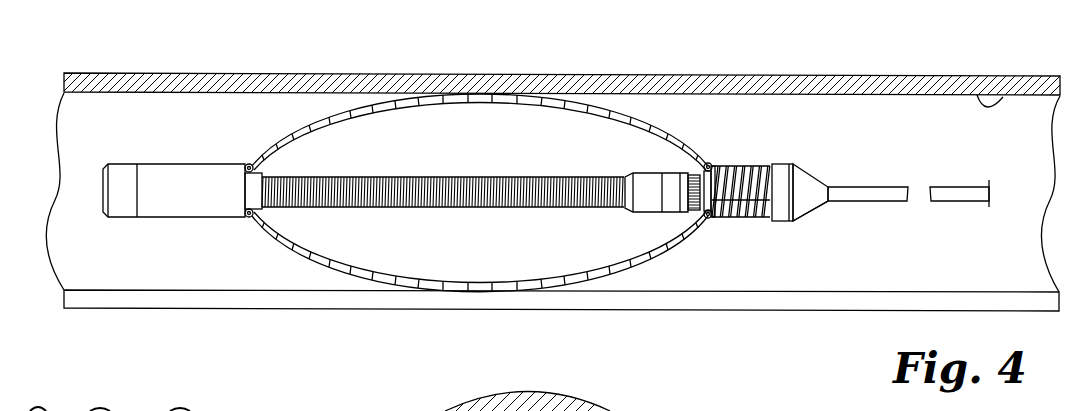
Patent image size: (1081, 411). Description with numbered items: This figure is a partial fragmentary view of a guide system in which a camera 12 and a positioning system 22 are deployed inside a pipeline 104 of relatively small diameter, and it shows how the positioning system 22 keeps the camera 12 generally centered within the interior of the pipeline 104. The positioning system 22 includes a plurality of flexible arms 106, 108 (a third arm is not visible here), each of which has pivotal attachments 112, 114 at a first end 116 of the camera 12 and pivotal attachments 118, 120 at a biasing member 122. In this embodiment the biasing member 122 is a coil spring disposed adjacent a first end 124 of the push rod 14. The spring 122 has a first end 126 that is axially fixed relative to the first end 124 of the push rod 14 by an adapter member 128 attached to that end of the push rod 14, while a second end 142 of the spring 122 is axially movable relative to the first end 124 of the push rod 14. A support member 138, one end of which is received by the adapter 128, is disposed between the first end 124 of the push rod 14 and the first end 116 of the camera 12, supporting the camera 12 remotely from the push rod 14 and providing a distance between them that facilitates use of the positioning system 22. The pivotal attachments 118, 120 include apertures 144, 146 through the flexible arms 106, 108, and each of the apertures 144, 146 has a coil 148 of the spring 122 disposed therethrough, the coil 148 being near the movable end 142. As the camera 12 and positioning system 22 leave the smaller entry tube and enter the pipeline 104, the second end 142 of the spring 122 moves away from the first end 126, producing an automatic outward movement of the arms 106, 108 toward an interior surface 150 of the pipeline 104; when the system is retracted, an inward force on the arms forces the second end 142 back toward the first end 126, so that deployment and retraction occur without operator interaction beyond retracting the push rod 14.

The camera 12 is at (127, 155).
The push rod 14 is at (885, 186).
The positioning system 22 is at (448, 184).
The pipeline 104 is at (808, 74).
The flexible arm 106 is at (285, 127).
The flexible arm 108 is at (315, 268).
The pivotal attachment 112 is at (246, 163).
The pivotal attachment 114 is at (250, 221).
The first end of the camera 116 is at (246, 216).
The pivotal attachment 118 is at (714, 170).
The pivotal attachment 120 is at (710, 216).
The biasing member 122 is at (751, 166).
The first end of the push rod 124 is at (828, 203).
The first end of the spring 126 is at (763, 218).
The adapter member 128 is at (811, 167).
The support member 138 is at (583, 212).
The second end of the spring 142 is at (707, 209).
The aperture 144 is at (712, 168).
The aperture 146 is at (715, 216).
The coil 148 is at (704, 167).
The interior surface 150 is at (977, 95).